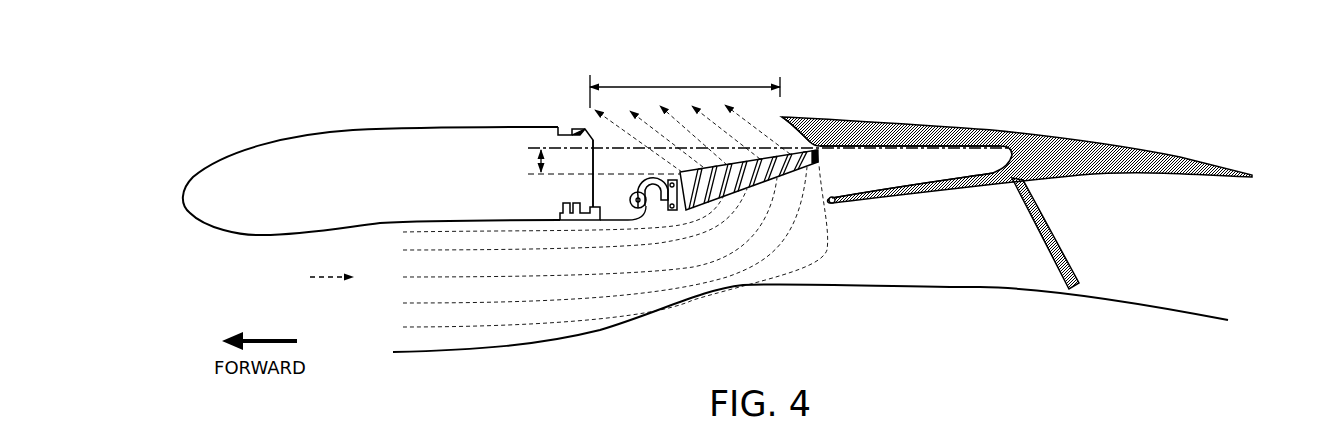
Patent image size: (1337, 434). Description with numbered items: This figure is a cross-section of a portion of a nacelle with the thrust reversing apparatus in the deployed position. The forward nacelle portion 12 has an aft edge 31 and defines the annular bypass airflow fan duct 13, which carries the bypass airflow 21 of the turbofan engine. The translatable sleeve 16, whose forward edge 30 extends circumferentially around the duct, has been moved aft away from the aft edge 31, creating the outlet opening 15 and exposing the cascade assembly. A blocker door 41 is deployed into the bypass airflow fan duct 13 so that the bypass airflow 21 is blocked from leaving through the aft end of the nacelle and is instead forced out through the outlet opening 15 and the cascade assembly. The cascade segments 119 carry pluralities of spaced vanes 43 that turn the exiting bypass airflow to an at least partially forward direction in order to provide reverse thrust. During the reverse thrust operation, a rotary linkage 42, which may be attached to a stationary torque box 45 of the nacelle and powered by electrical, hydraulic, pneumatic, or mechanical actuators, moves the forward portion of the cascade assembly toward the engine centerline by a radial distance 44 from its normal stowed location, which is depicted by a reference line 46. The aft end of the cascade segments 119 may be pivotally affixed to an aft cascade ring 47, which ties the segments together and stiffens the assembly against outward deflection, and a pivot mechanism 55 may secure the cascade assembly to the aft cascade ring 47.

The forward nacelle portion 12 is at (353, 130).
The bypass airflow fan duct 13 is at (472, 292).
The outlet opening 15 is at (685, 86).
The translatable sleeve 16 is at (992, 128).
The bypass airflow 21 is at (365, 284).
The forward edge 30 is at (782, 115).
The aft edge 31 is at (587, 125).
The blocker door 41 is at (1047, 217).
The rotary linkage 42 is at (650, 175).
The spaced vanes 43 is at (763, 163).
The radial distance 44 is at (523, 161).
The stationary torque box 45 is at (590, 153).
The reference line 46 is at (530, 147).
The aft cascade ring 47 is at (817, 146).
The pivot mechanism 55 is at (823, 151).
The cascade segments 119 is at (795, 150).